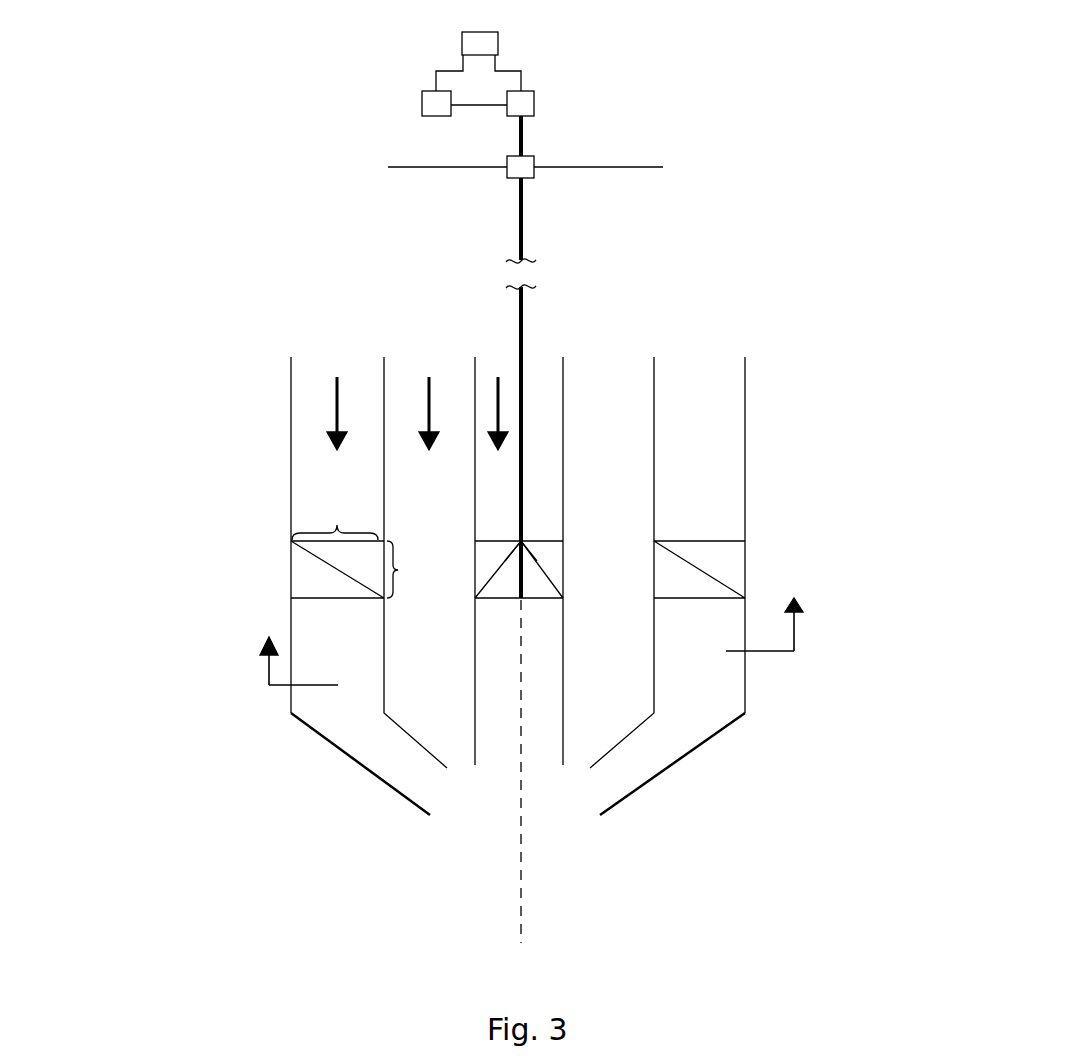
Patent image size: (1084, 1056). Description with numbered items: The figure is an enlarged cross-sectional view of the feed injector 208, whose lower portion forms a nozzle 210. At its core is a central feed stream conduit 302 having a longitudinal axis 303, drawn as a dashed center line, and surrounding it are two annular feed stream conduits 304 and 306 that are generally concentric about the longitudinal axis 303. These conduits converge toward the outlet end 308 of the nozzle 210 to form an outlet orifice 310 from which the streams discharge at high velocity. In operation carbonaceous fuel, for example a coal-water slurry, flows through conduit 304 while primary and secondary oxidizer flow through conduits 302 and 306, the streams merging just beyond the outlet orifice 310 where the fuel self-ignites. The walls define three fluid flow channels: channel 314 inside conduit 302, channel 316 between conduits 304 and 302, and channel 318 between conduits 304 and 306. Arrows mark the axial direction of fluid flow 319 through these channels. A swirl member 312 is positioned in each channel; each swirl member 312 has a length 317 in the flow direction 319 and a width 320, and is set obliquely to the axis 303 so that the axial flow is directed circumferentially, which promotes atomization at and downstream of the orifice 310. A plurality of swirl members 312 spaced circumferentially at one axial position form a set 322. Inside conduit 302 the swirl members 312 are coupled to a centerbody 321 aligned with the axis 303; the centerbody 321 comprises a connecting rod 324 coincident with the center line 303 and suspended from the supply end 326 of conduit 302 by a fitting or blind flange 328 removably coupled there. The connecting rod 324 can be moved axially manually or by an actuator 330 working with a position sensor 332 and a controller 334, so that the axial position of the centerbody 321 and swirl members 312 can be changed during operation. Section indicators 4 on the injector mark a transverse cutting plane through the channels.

The feed injector 208 is at (834, 413).
The nozzle 210 is at (718, 785).
The central feed stream conduit 302 is at (563, 372).
The longitudinal axis 303 is at (522, 853).
The annular feed stream conduit 304 is at (654, 365).
The annular feed stream conduit 306 is at (745, 365).
The outlet end 308 is at (797, 679).
The outlet orifice 310 is at (482, 829).
The swirl member 312 is at (335, 571).
The fluid flow channel 314 is at (488, 368).
The fluid flow channel 316 is at (402, 368).
The length 317 is at (400, 570).
The fluid flow channel 318 is at (307, 368).
The direction of fluid flow 319 is at (337, 392).
The width 320 is at (335, 517).
The centerbody 321 is at (540, 545).
The set of swirl members 322 is at (222, 590).
The connecting rod 324 is at (523, 222).
The supply end 326 is at (483, 203).
The fitting or blind flange 328 is at (534, 156).
The actuator 330 is at (534, 92).
The position sensor 332 is at (422, 95).
The controller 334 is at (497, 33).
The section line 4 is at (534, 643).